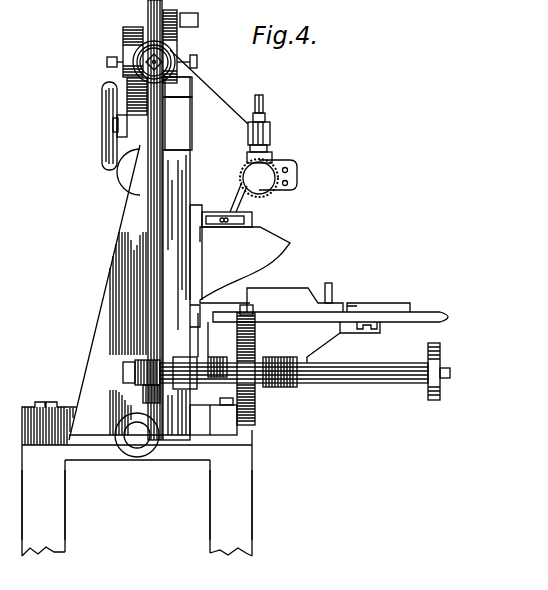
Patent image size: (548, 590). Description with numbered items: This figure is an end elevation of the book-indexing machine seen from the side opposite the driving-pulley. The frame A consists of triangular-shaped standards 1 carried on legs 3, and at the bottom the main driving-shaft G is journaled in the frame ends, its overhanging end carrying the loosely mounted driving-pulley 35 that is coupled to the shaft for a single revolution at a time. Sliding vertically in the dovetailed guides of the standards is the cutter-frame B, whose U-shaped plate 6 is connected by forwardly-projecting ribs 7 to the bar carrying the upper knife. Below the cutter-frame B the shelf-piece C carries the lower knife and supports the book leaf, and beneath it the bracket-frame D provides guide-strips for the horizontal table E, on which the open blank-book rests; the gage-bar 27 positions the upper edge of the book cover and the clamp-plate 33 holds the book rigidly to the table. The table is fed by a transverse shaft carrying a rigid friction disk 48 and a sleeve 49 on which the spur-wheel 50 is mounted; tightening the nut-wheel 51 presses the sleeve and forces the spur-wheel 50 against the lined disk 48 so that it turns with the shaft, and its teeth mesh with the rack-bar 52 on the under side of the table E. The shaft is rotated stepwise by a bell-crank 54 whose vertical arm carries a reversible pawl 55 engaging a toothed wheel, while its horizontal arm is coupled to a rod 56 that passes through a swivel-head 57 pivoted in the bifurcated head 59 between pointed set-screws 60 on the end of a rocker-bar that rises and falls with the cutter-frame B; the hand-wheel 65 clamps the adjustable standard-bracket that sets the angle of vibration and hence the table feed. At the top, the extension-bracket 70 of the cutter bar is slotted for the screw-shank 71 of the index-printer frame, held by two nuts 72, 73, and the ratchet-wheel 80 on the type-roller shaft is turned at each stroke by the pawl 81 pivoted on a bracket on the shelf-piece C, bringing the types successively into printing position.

The standard 1 is at (293, 180).
The leg 3 is at (137, 505).
The U-shaped plate 6 is at (190, 100).
The forwardly-projecting rib 7 is at (192, 123).
The gage-bar 27 is at (395, 300).
The clamp-plate 33 is at (333, 298).
The driving-pulley 35 is at (198, 416).
The disk 48 is at (236, 385).
The sleeve 49 is at (387, 380).
The spur-wheel 50 is at (256, 410).
The nut-wheel 51 is at (432, 400).
The rack-bar 52 is at (243, 314).
The bell-crank 54 is at (138, 364).
The reversible pawl 55 is at (142, 390).
The rod 56 is at (148, 206).
The swivel-head 57 is at (176, 64).
The bifurcated head 59 is at (128, 48).
The pointed set-screw 60 is at (198, 64).
The hand-wheel 65 is at (103, 138).
The extension-bracket 70 is at (271, 137).
The screw-shank 71 is at (263, 108).
The nut 72 is at (268, 150).
The nut 73 is at (266, 124).
The ratchet-wheel 80 is at (259, 178).
The pawl 81 is at (248, 204).
The frame A is at (137, 350).
The cutter-frame B is at (216, 106).
The shelf-piece C is at (240, 266).
The bracket-frame D is at (340, 342).
The table E is at (323, 322).
The main driving-shaft G is at (137, 435).